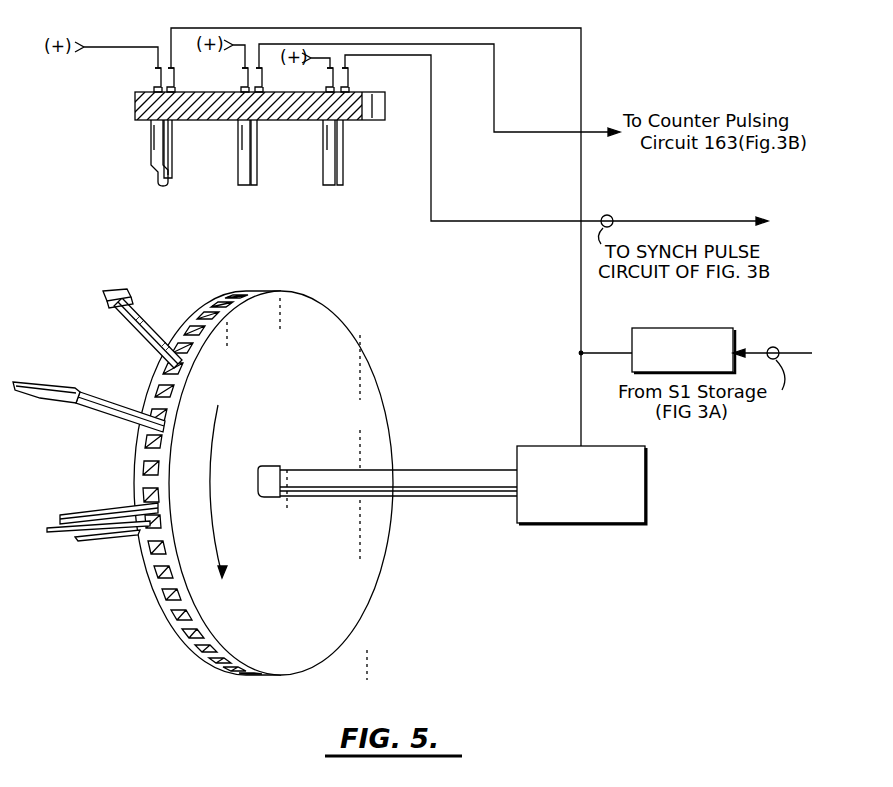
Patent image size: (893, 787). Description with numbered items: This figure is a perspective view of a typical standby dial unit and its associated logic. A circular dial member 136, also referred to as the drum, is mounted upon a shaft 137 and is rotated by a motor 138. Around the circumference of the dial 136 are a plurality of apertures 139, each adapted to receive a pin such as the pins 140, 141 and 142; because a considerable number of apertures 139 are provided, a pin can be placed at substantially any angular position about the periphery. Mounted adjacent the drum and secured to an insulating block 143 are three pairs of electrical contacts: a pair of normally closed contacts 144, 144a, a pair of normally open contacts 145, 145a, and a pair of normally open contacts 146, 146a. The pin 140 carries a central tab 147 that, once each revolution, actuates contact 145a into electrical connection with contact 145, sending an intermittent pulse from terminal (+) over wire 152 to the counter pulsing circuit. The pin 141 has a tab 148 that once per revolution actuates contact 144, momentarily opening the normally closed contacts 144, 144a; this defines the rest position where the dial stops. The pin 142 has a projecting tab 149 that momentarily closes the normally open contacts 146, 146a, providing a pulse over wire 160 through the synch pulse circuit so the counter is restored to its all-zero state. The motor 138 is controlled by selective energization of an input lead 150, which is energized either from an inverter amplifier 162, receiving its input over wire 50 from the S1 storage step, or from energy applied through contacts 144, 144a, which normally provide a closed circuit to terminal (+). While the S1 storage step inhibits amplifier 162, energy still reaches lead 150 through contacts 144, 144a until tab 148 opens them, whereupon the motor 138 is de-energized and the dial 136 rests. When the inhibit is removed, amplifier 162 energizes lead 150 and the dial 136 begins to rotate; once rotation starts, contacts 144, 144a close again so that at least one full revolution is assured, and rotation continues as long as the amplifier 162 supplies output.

The wire 50 is at (790, 357).
The circular dial member 136 is at (355, 604).
The shaft 137 is at (421, 484).
The motor 138 is at (573, 506).
The apertures 139 is at (199, 652).
The pin 140 is at (160, 320).
The pin 141 is at (118, 406).
The pin 142 is at (115, 505).
The insulating block 143 is at (352, 97).
The normally closed contact 144 is at (150, 157).
The normally closed contact 144a is at (170, 162).
The normally open contact 145 is at (239, 176).
The normally open contact 145a is at (254, 172).
The normally open contact 146 is at (324, 166).
The normally open contact 146a is at (340, 174).
The central tab 147 is at (128, 300).
The tab 148 is at (28, 384).
The projecting tab 149 is at (95, 541).
The input lead 150 is at (581, 413).
The wire 152 is at (452, 46).
The wire 160 is at (431, 188).
The inverter amplifier 162 is at (690, 328).